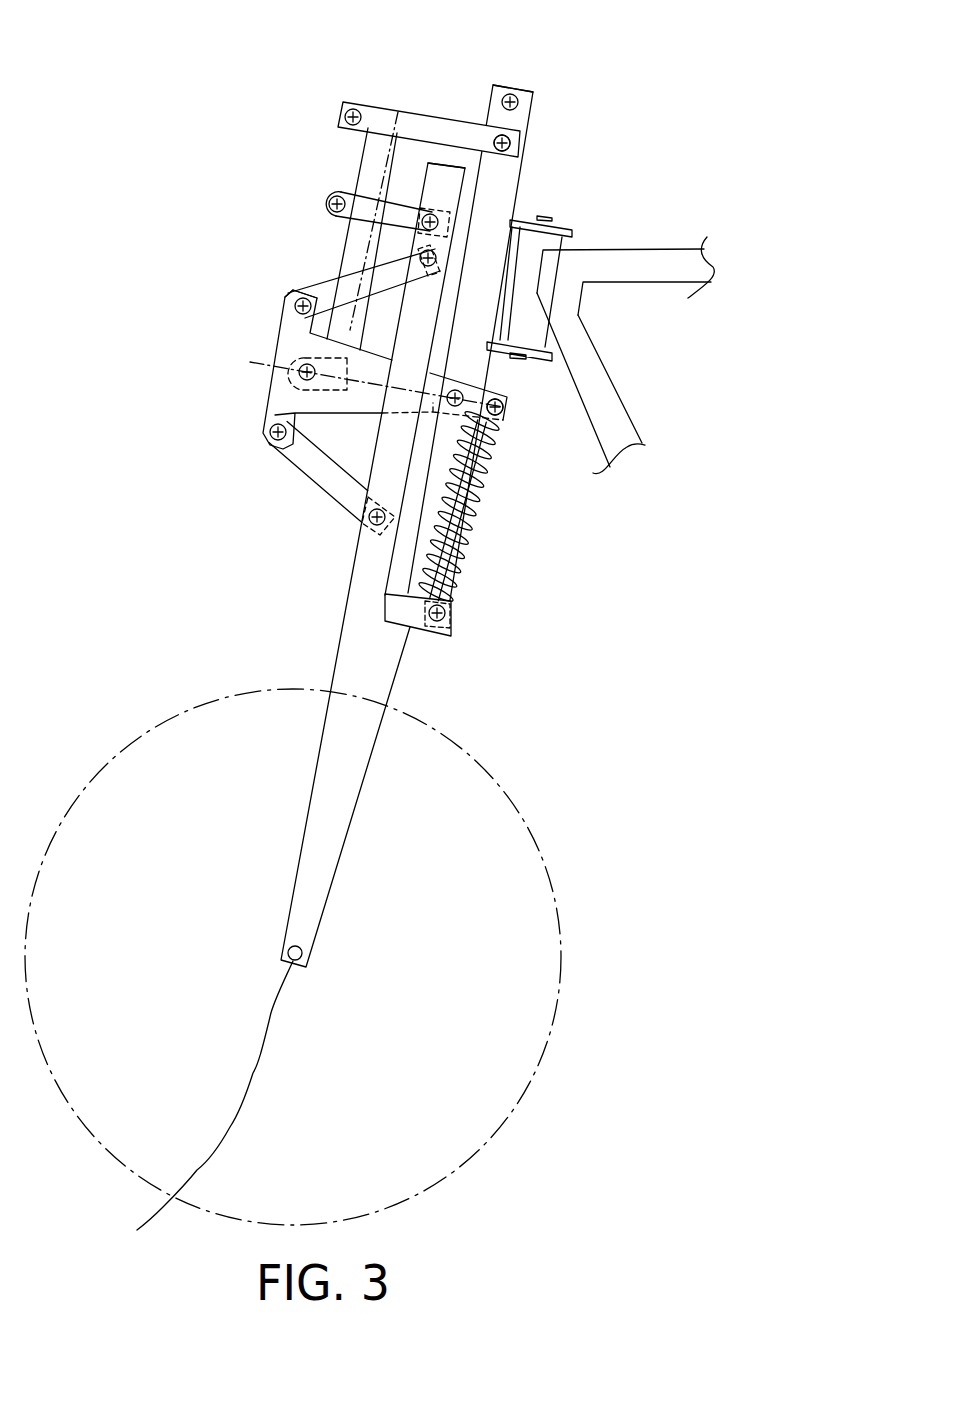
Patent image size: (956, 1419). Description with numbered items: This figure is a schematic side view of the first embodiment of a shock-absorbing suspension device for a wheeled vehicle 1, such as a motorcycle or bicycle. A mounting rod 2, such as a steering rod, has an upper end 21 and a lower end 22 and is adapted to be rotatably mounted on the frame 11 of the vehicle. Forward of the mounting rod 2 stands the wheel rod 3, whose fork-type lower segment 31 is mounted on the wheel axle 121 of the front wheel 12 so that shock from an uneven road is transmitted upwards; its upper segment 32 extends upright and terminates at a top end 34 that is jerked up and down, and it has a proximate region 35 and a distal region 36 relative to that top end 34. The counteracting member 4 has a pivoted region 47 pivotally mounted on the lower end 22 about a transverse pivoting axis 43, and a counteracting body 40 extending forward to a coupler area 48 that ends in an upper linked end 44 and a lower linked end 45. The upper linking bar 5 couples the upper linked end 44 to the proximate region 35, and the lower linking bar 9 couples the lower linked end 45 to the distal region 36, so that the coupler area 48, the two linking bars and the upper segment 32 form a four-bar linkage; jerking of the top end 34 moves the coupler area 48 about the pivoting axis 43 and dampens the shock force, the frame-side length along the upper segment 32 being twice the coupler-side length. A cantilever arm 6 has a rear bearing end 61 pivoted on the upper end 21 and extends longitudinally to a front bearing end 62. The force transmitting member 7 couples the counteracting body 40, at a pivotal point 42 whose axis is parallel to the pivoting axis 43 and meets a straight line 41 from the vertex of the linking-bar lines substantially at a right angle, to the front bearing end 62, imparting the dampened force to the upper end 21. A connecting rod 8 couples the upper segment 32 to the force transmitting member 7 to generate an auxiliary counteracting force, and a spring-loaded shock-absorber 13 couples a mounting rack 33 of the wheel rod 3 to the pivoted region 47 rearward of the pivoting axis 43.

The wheeled vehicle 1 is at (600, 309).
The frame 11 is at (640, 260).
The front wheel 12 is at (503, 1054).
The wheel axle 121 is at (191, 1107).
The spring-loaded shock-absorber 13 is at (494, 505).
The mounting rod 2 is at (500, 197).
The upper end 21 is at (502, 143).
The lower end 22 is at (495, 407).
The wheel rod 3 is at (397, 492).
The lower segment 31 is at (363, 668).
The upper segment 32 is at (480, 303).
The mounting rack 33 is at (410, 608).
The top end 34 is at (447, 170).
The proximate region 35 is at (440, 255).
The distal region 36 is at (370, 517).
The counteracting member 4 is at (394, 363).
The counteracting body 40 is at (350, 402).
The straight line 41 is at (250, 362).
The pivotal point 42 is at (300, 372).
The pivoting axis 43 is at (490, 447).
The upper linked end 44 is at (295, 293).
The lower linked end 45 is at (265, 437).
The pivoted region 47 is at (432, 410).
The coupler area 48 is at (283, 392).
The upper linking bar 5 is at (328, 272).
The cantilever arm 6 is at (496, 90).
The rear bearing end 61 is at (510, 143).
The front bearing end 62 is at (357, 110).
The force transmitting member 7 is at (353, 165).
The connecting rod 8 is at (355, 206).
The lower linking bar 9 is at (300, 482).